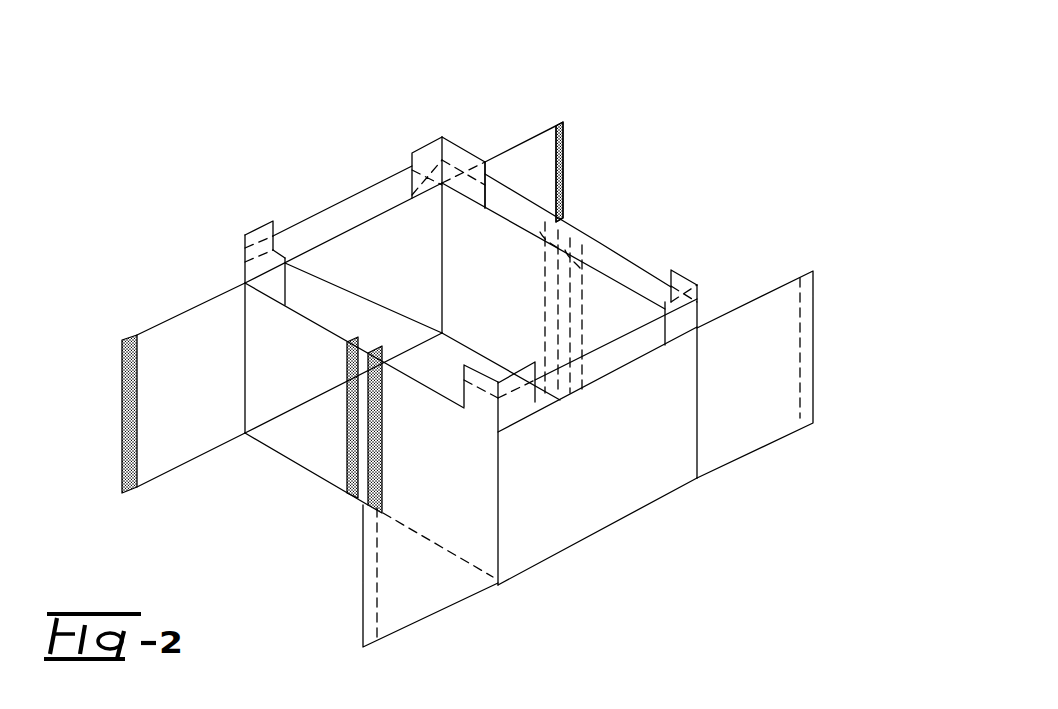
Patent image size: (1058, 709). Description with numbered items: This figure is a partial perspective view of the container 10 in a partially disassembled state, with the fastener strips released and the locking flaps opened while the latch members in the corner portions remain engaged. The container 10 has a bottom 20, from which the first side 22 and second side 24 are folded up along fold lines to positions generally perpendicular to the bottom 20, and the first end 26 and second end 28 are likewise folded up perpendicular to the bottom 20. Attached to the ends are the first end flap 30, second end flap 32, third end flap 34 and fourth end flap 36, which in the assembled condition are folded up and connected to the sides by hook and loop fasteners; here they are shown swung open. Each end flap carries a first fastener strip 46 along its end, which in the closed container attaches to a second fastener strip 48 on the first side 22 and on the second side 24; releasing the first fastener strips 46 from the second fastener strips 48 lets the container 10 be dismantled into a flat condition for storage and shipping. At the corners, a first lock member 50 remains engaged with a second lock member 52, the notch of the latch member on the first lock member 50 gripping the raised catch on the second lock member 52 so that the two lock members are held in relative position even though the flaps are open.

The container 10 is at (682, 150).
The bottom 20 is at (447, 353).
The first side 22 is at (314, 402).
The second side 24 is at (532, 344).
The first end 26 is at (600, 510).
The second end 28 is at (396, 285).
The first end flap 30 is at (437, 595).
The second end flap 32 is at (742, 440).
The third end flap 34 is at (205, 402).
The fourth end flap 36 is at (523, 163).
The first fastener strip 46 is at (127, 413).
The second fastener strip 48 is at (545, 223).
The first lock member 50 is at (470, 150).
The second lock member 52 is at (413, 163).